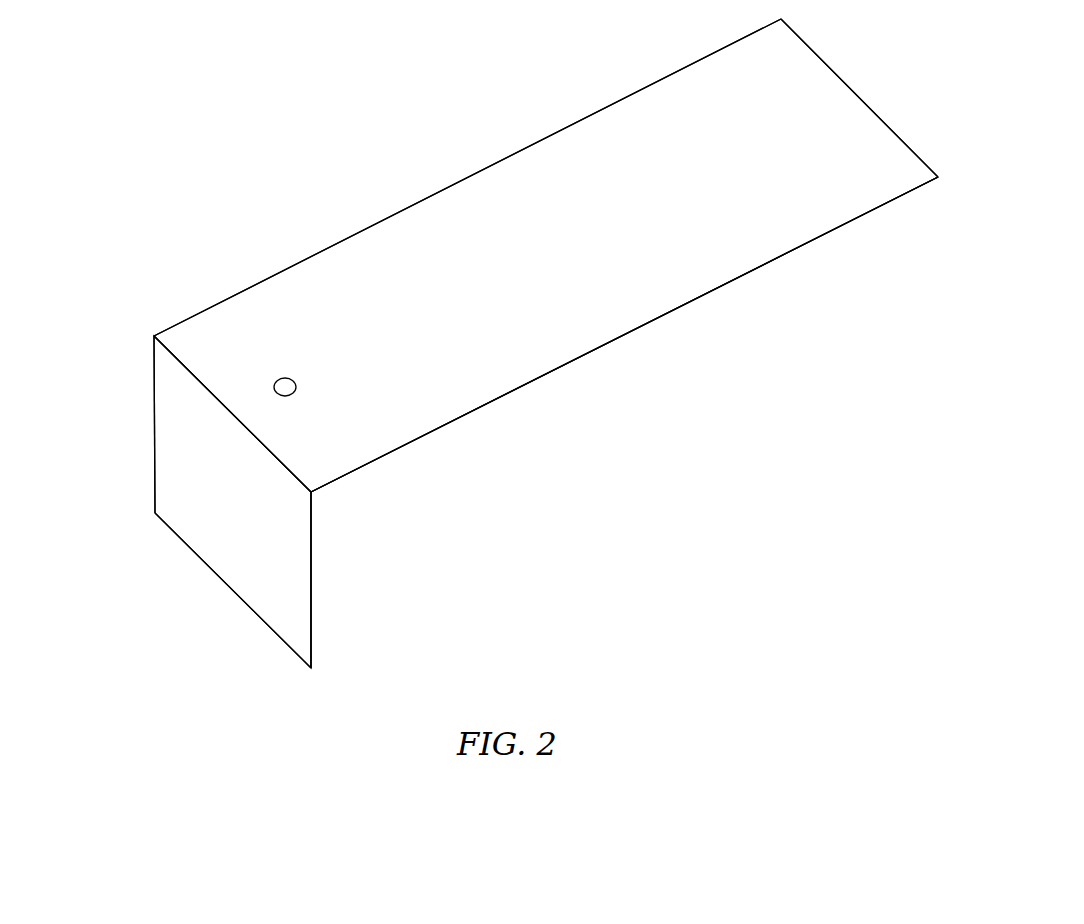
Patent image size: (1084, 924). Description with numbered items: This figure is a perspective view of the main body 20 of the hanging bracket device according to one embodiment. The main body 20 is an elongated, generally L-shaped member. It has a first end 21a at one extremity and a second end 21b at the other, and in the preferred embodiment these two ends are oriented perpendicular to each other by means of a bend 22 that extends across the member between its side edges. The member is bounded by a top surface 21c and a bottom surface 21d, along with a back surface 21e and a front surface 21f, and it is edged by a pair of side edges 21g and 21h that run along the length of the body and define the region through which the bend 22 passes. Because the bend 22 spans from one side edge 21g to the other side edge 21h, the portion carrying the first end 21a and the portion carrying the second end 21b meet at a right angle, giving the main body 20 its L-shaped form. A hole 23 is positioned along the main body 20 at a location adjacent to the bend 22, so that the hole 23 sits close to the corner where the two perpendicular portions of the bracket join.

The main body 20 is at (288, 84).
The first end 21a is at (860, 97).
The second end 21b is at (231, 591).
The top surface 21c is at (551, 270).
The bottom surface 21d is at (468, 412).
The back surface 21e is at (247, 509).
The front surface 21f is at (311, 623).
The side edge 21g is at (690, 302).
The side edge 21h is at (548, 136).
The bend 22 is at (219, 400).
The hole 23 is at (287, 378).